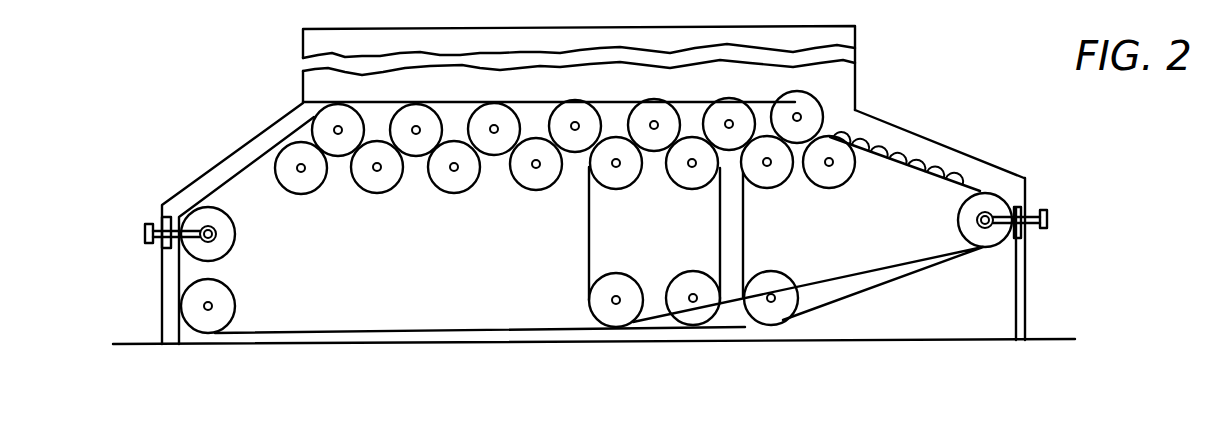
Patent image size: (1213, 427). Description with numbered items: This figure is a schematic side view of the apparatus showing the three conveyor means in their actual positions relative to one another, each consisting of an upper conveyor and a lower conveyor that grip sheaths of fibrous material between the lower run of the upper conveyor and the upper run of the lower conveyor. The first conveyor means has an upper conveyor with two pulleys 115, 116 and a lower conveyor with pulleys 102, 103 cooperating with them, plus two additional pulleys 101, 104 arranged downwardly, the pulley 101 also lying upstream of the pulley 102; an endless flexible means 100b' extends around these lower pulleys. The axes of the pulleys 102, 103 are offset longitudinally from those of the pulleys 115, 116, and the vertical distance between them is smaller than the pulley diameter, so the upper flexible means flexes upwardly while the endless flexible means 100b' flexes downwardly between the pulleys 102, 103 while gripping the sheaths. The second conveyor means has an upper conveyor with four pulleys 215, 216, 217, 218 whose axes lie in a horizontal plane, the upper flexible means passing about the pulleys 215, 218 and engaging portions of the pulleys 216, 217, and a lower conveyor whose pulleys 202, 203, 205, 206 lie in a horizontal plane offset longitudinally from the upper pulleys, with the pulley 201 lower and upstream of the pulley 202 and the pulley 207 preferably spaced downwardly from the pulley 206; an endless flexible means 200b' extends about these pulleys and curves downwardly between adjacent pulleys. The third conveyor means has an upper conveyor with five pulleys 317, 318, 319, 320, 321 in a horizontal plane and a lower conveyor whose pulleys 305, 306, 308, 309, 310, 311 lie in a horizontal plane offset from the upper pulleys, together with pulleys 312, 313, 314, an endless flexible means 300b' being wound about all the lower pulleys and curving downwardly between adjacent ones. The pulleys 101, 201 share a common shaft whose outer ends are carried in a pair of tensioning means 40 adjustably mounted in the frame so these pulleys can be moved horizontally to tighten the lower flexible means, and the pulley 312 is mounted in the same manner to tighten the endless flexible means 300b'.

The tensioning means 40 is at (145, 234).
The endless flexible means 100b' is at (808, 227).
The pulley 101 is at (963, 220).
The pulley 201 is at (972, 215).
The pulley 102 is at (882, 140).
The pulley 202 is at (855, 142).
The pulley 103 is at (792, 175).
The pulley 203 is at (772, 178).
The pulley 104 is at (780, 315).
The pulley 115 is at (860, 99).
The pulley 215 is at (813, 107).
The pulley 116 is at (740, 108).
The pulley 216 is at (723, 108).
The pulley 217 is at (661, 111).
The pulley 317 is at (645, 110).
The pulley 218 is at (568, 113).
The pulley 318 is at (572, 112).
The endless flexible means 200b' is at (616, 234).
The pulley 205 is at (692, 189).
The pulley 305 is at (687, 180).
The pulley 206 is at (616, 189).
The pulley 306 is at (627, 175).
The pulley 207 is at (593, 305).
The endless flexible means 300b' is at (428, 230).
The pulley 308 is at (537, 179).
The pulley 309 is at (460, 182).
The pulley 310 is at (382, 183).
The pulley 311 is at (312, 183).
The pulley 312 is at (222, 228).
The pulley 313 is at (227, 317).
The pulley 314 is at (690, 320).
The pulley 319 is at (490, 112).
The pulley 320 is at (425, 84).
The pulley 321 is at (345, 86).